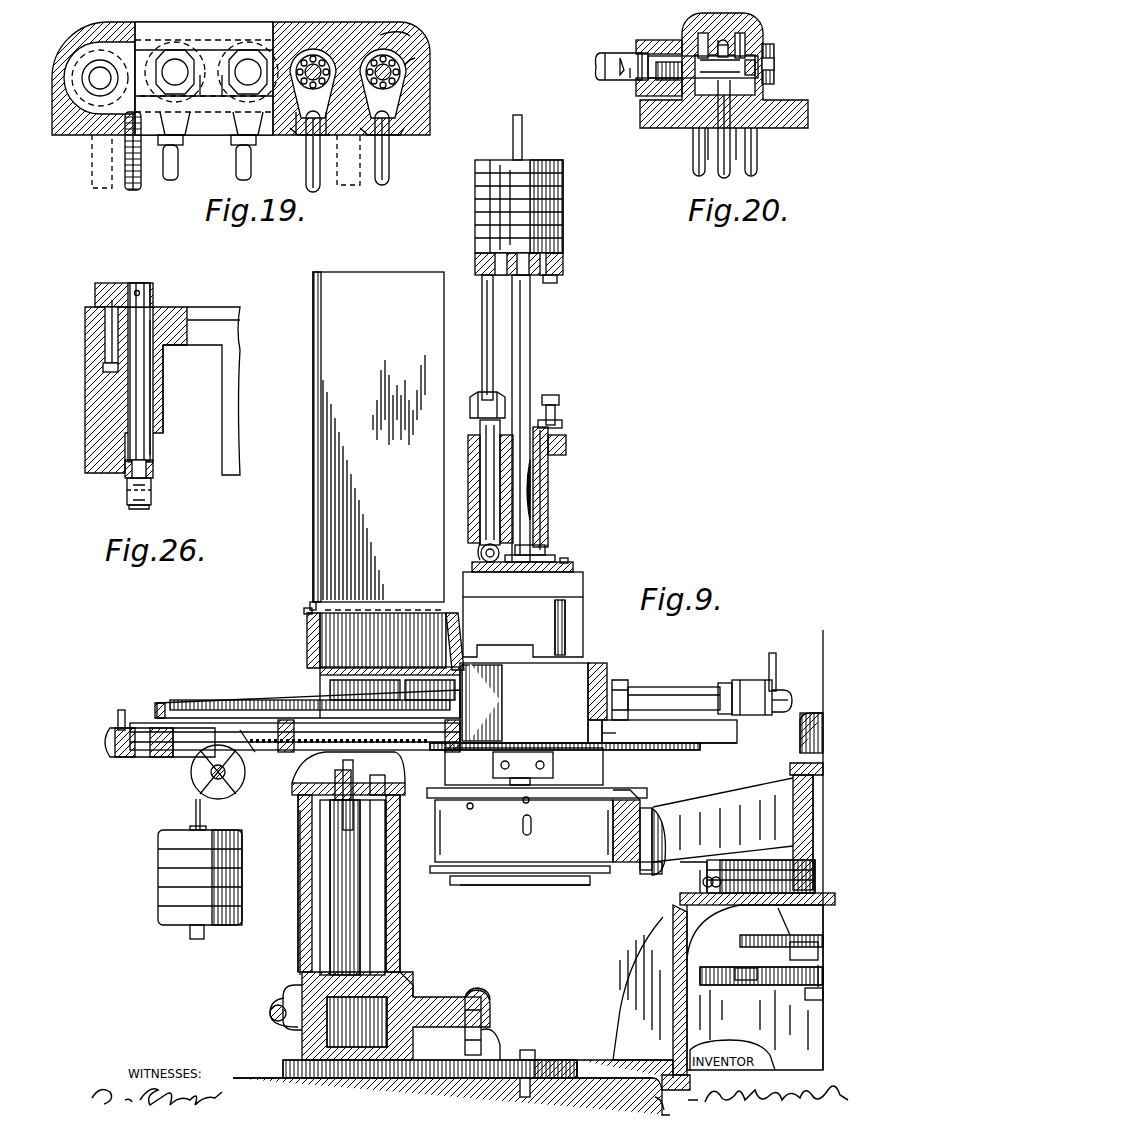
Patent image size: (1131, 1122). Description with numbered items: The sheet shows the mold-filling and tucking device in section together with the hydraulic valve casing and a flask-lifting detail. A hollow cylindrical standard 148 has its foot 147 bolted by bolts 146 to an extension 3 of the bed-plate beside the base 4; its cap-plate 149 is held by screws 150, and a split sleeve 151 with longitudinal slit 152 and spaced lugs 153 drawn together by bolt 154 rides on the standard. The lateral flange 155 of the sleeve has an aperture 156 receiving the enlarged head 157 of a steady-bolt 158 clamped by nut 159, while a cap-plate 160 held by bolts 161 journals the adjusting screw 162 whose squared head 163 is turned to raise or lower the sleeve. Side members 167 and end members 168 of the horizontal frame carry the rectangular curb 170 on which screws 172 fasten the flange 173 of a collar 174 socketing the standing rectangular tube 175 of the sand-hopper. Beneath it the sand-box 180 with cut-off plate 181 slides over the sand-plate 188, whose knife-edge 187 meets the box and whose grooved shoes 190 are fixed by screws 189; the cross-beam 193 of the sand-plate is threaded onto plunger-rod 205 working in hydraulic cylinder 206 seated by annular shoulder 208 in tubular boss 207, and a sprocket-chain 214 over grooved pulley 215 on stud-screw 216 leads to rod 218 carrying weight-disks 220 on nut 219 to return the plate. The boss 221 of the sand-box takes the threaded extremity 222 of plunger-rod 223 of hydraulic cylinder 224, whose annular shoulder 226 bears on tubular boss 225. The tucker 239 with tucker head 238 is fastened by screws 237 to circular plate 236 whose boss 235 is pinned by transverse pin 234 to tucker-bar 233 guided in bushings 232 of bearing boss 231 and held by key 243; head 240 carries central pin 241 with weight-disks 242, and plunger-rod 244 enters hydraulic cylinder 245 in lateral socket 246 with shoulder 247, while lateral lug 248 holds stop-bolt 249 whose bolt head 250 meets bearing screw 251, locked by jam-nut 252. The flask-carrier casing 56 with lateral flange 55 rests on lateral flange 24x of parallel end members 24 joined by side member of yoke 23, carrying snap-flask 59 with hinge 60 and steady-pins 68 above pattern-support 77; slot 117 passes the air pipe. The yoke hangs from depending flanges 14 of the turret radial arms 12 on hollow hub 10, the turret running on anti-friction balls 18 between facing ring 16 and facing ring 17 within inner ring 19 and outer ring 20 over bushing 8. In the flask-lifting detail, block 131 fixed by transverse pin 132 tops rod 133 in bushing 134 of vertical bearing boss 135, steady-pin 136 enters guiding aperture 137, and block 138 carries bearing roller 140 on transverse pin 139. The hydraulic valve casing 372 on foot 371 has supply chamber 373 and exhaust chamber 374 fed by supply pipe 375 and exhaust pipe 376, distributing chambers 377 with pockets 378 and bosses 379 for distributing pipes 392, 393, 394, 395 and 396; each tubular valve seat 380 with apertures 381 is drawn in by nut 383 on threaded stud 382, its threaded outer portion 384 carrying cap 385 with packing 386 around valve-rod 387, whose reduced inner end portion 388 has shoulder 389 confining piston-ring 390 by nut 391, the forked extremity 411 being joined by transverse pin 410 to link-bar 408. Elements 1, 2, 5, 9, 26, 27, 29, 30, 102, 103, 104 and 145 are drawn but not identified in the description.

In FIG. 19, the housing 380 is at (80, 45).
In FIG. 20, the housing 380 is at (680, 80).
In FIG. 19, the housing end 381 is at (415, 62).
In FIG. 19, the housing body 372 is at (230, 50).
In FIG. 20, the housing body 372 is at (725, 45).
In FIG. 19, the hex nut 411 is at (172, 55).
In FIG. 19, the bushing 385 is at (215, 80).
In FIG. 20, the bushing 385 is at (648, 92).
In FIG. 19, the bearing boss 373 is at (112, 100).
In FIG. 20, the bearing boss 373 is at (750, 32).
In FIG. 19, the ball bearing 389 is at (305, 45).
In FIG. 19, the ball bearing 377 is at (322, 45).
In FIG. 20, the ball bearing 377 is at (722, 40).
In FIG. 19, the pin boss 378 is at (400, 132).
In FIG. 20, the pin boss 378 is at (695, 134).
In FIG. 19, the pin boss 379 is at (296, 138).
In FIG. 20, the pin boss 379 is at (758, 132).
In FIG. 19, the pin 375 is at (128, 182).
In FIG. 20, the pin 375 is at (745, 150).
In FIG. 19, the pin outline 392 is at (92, 180).
In FIG. 9, the pin outline 392 is at (118, 714).
In FIG. 19, the pin 393 is at (180, 168).
In FIG. 9, the pin 393 is at (777, 660).
In FIG. 19, the pin 394 is at (236, 165).
In FIG. 19, the pin roller 395 is at (306, 170).
In FIG. 9, the pin roller 395 is at (482, 553).
In FIG. 19, the pin outline 376 is at (358, 178).
In FIG. 20, the pin outline 376 is at (695, 158).
In FIG. 19, the pin 396 is at (390, 162).
In FIG. 20, the pin 396 is at (745, 164).
In FIG. 20, the bar 371 is at (798, 102).
In FIG. 20, the slot 374 is at (700, 36).
In FIG. 20, the slot 390 is at (748, 32).
In FIG. 20, the key 391 is at (745, 62).
In FIG. 20, the end plate 383 is at (770, 52).
In FIG. 20, the end plate hole 382 is at (775, 66).
In FIG. 20, the shaft end 408 is at (597, 55).
In FIG. 20, the spring 386 is at (622, 62).
In FIG. 20, the pin 410 is at (635, 66).
In FIG. 20, the collar 384 is at (675, 40).
In FIG. 20, the collar 387 is at (630, 78).
In FIG. 20, the shaft 388 is at (705, 62).
In FIG. 26, the block 56 is at (85, 408).
In FIG. 9, the block 56 is at (440, 870).
In FIG. 26, the cap 131 is at (128, 285).
In FIG. 26, the hole 132 is at (140, 292).
In FIG. 26, the slot 136 is at (108, 322).
In FIG. 26, the stop 137 is at (103, 369).
In FIG. 26, the rod 133 is at (140, 385).
In FIG. 26, the sleeve 134 is at (152, 400).
In FIG. 26, the bore 135 is at (160, 421).
In FIG. 26, the collar 138 is at (152, 468).
In FIG. 26, the tip 139 is at (151, 491).
In FIG. 26, the tip end 140 is at (140, 508).
In FIG. 9, the shaft 241 is at (523, 138).
In FIG. 9, the cylinder 242 is at (563, 190).
In FIG. 9, the nut 240 is at (563, 262).
In FIG. 9, the lug 251 is at (556, 280).
In FIG. 9, the rod 244 is at (484, 354).
In FIG. 9, the rod 233 is at (530, 352).
In FIG. 9, the rod 232 is at (540, 430).
In FIG. 9, the screw head 250 is at (558, 400).
In FIG. 9, the screw 249 is at (556, 412).
In FIG. 9, the washer 252 is at (562, 428).
In FIG. 9, the bracket 248 is at (566, 447).
In FIG. 9, the nut 247 is at (480, 430).
In FIG. 9, the plunger 245 is at (482, 447).
In FIG. 9, the housing 246 is at (468, 497).
In FIG. 9, the guide 231 is at (548, 488).
In FIG. 9, the cam 243 is at (548, 503).
In FIG. 9, the block 235 is at (550, 540).
In FIG. 9, the plate 234 is at (548, 555).
In FIG. 9, the lug 237 is at (565, 560).
In FIG. 9, the base plate 236 is at (575, 567).
In FIG. 9, the block 238 is at (523, 584).
In FIG. 9, the block 239 is at (523, 627).
In FIG. 9, the column 175 is at (379, 441).
In FIG. 9, the clip 174 is at (313, 605).
In FIG. 9, the clip 172 is at (307, 612).
In FIG. 9, the clip 173 is at (307, 620).
In FIG. 9, the column base 170 is at (307, 648).
In FIG. 9, the plate 181 is at (425, 668).
In FIG. 9, the lever 167 is at (290, 690).
In FIG. 9, the stop 168 is at (158, 705).
In FIG. 9, the rack shaft 205 is at (358, 740).
In FIG. 9, the shaft end 207 is at (150, 758).
In FIG. 9, the shaft 208 is at (190, 752).
In FIG. 9, the collar 206 is at (255, 755).
In FIG. 9, the collar 193 is at (452, 752).
In FIG. 9, the pulley 215 is at (240, 782).
In FIG. 9, the pulley hub 216 is at (212, 775).
In FIG. 9, the cord 214 is at (198, 808).
In FIG. 9, the hook 218 is at (196, 830).
In FIG. 9, the weight 220 is at (158, 890).
In FIG. 9, the weight cap 219 is at (206, 934).
In FIG. 9, the flange 160 is at (395, 778).
In FIG. 9, the nut 162 is at (338, 780).
In FIG. 9, the rod 163 is at (350, 775).
In FIG. 9, the nut 161 is at (375, 780).
In FIG. 9, the column wall 150 is at (397, 820).
In FIG. 9, the inner tube 149 is at (352, 825).
In FIG. 9, the column 152 is at (300, 880).
In FIG. 9, the column 151 is at (397, 910).
In FIG. 9, the tube 148 is at (390, 940).
In FIG. 9, the ear 153 is at (275, 1000).
In FIG. 9, the pin 154 is at (270, 1012).
In FIG. 9, the bracket 155 is at (440, 1010).
In FIG. 9, the boss 156 is at (478, 992).
In FIG. 9, the bolt 157 is at (483, 1015).
In FIG. 9, the bolt shank 158 is at (490, 1030).
In FIG. 9, the footing 159 is at (470, 1058).
In FIG. 9, the nut 146 is at (535, 1050).
In FIG. 9, the plate 147 is at (572, 1057).
In FIG. 9, the base 3 is at (305, 1098).
In FIG. 9, the base plate 1 is at (576, 1098).
In FIG. 9, the bed 2 is at (672, 1092).
In FIG. 9, the wall 5 is at (660, 1045).
In FIG. 9, the frame 4 is at (645, 955).
In FIG. 9, the plate 17 is at (680, 898).
In FIG. 9, the roller 18 is at (705, 884).
In FIG. 9, the pin 20 is at (700, 880).
In FIG. 9, the roller assembly 19 is at (725, 858).
In FIG. 9, the bracket 16 is at (700, 862).
In FIG. 9, the band 8 is at (785, 940).
In FIG. 9, the block 9 is at (815, 948).
In FIG. 9, the slide 29 is at (745, 972).
In FIG. 9, the band 30 is at (755, 976).
In FIG. 9, the block 27 is at (825, 996).
In FIG. 9, the frame 26 is at (749, 1030).
In FIG. 9, the plate 188 is at (552, 743).
In FIG. 9, the bracket 187 is at (590, 740).
In FIG. 9, the box edge 189 is at (608, 735).
In FIG. 9, the box 190 is at (669, 731).
In FIG. 9, the block 180 is at (524, 703).
In FIG. 9, the bracket 221 is at (600, 685).
In FIG. 9, the nut 222 is at (622, 690).
In FIG. 9, the shaft 224 is at (665, 686).
In FIG. 9, the collar 226 is at (720, 685).
In FIG. 9, the cylinder 225 is at (750, 680).
In FIG. 9, the elbow 223 is at (775, 712).
In FIG. 9, the housing 59 is at (524, 766).
In FIG. 9, the inner box 60 is at (540, 760).
In FIG. 9, the plate 55 is at (435, 792).
In FIG. 9, the hole 24x is at (468, 803).
In FIG. 9, the table 23 is at (608, 820).
In FIG. 9, the table 24 is at (524, 832).
In FIG. 9, the slot 117 is at (530, 825).
In FIG. 9, the hole 68 is at (528, 802).
In FIG. 9, the bracket 14 is at (645, 792).
In FIG. 9, the gear 104 is at (660, 815).
In FIG. 9, the gear 103 is at (660, 840).
In FIG. 9, the shelf 12 is at (723, 820).
In FIG. 9, the wall 10 is at (805, 812).
In FIG. 9, the bearing 102 is at (640, 872).
In FIG. 9, the plate 77 is at (460, 880).
In FIG. 9, the plate 145 is at (592, 885).